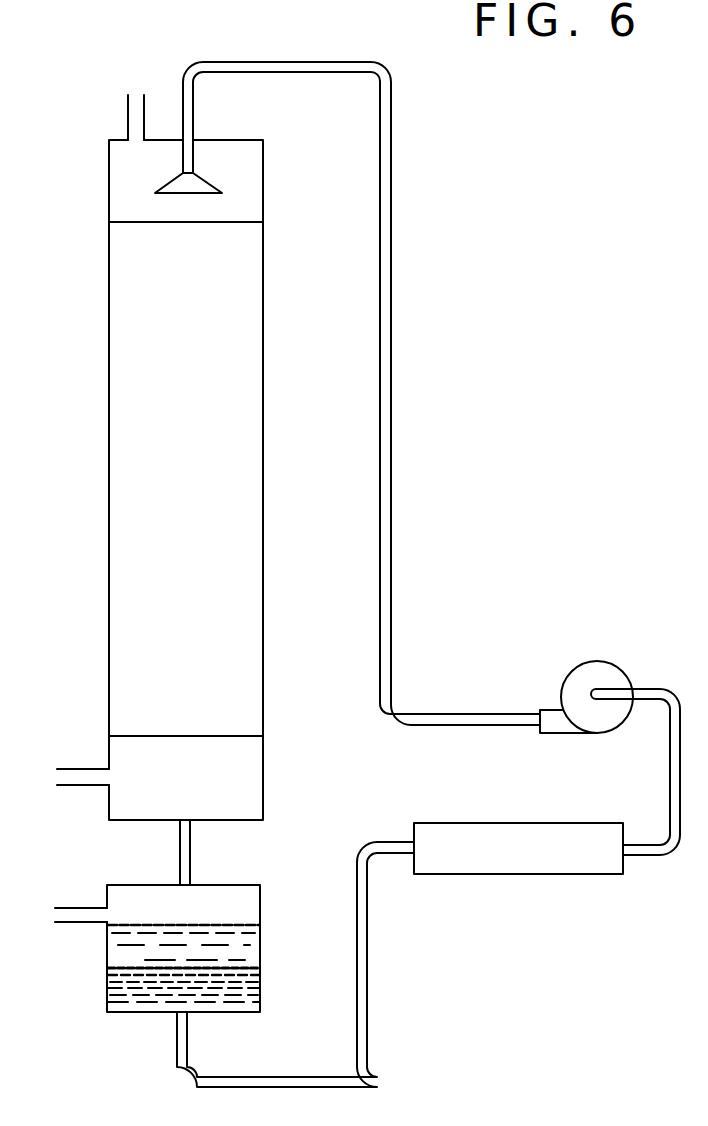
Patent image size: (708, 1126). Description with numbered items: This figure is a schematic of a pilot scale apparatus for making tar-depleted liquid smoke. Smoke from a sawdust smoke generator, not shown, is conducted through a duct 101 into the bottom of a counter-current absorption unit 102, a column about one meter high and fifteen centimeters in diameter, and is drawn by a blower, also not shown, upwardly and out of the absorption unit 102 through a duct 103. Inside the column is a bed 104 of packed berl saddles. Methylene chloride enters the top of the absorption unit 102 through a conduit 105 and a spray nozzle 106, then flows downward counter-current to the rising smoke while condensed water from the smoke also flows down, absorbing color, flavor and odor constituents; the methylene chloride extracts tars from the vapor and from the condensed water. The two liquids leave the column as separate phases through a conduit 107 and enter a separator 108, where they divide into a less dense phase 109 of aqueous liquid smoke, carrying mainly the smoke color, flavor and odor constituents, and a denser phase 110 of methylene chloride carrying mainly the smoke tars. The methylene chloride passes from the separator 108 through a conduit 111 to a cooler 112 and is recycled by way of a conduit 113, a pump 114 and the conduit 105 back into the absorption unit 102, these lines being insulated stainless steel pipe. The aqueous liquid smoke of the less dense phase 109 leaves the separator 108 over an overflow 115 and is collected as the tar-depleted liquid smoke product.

The duct 101 is at (85, 769).
The counter-current absorption unit 102 is at (109, 343).
The duct 103 is at (128, 121).
The bed 104 is at (243, 413).
The conduit 105 is at (427, 209).
The spray nozzle 106 is at (203, 182).
The conduit 107 is at (190, 855).
The separator 108 is at (107, 963).
The less dense phase 109 is at (242, 942).
The denser phase 110 is at (248, 992).
The conduit 111 is at (367, 1043).
The cooler 112 is at (520, 874).
The conduit 113 is at (668, 785).
The pump 114 is at (598, 667).
The overflow 115 is at (77, 908).